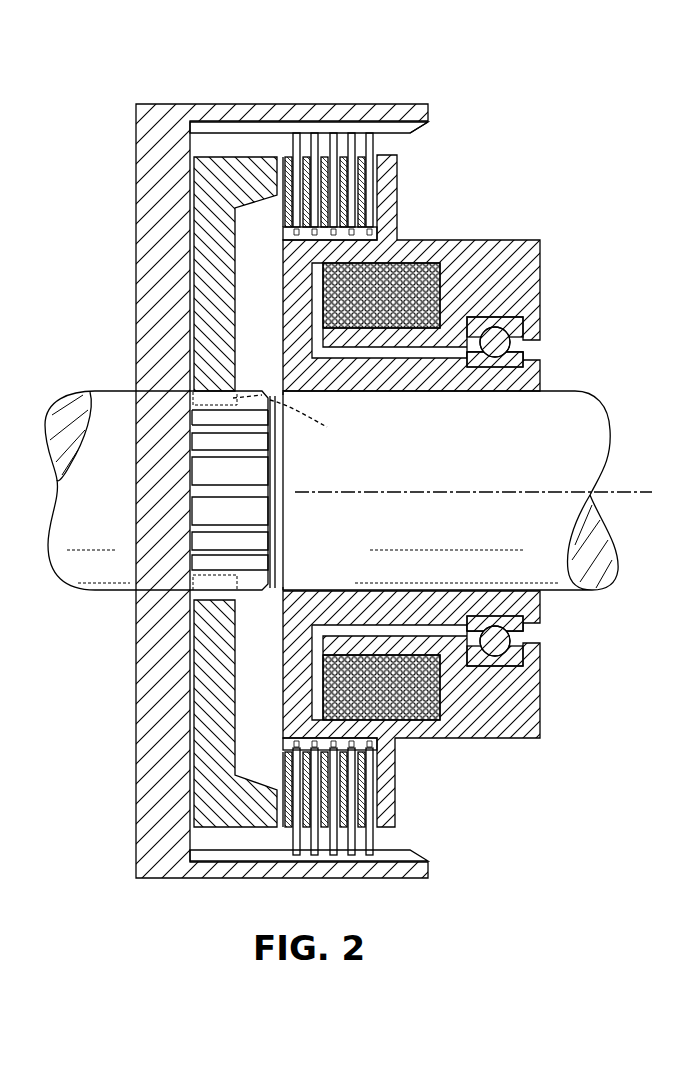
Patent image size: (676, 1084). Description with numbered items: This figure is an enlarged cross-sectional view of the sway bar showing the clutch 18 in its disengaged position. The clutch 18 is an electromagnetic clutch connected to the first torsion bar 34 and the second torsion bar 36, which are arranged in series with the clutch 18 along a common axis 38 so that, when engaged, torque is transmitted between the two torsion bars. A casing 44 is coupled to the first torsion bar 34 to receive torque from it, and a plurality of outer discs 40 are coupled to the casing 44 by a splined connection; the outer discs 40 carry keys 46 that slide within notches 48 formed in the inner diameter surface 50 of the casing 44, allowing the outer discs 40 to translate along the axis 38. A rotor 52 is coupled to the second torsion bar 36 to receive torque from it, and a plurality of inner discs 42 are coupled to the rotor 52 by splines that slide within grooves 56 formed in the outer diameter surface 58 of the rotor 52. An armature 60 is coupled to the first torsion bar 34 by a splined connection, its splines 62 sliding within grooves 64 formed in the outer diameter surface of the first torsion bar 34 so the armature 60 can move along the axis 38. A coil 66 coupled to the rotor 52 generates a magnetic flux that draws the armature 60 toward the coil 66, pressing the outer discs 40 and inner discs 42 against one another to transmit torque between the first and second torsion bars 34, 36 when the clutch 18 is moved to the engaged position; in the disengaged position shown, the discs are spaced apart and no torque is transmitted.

The clutch 18 is at (130, 94).
The first torsion bar 34 is at (563, 387).
The second torsion bar 36 is at (105, 387).
The common axis 38 is at (566, 490).
The outer discs 40 is at (332, 150).
The inner discs 42 is at (322, 218).
The casing 44 is at (135, 146).
The keys 46 is at (371, 133).
The notches 48 is at (402, 128).
The inner diameter surface 50 is at (392, 133).
The rotor 52 is at (395, 807).
The grooves 56 is at (377, 746).
The outer diameter surface 58 is at (129, 500).
The armature 60 is at (213, 157).
The splines 62 is at (268, 397).
The grooves 64 is at (262, 480).
The coil 66 is at (440, 711).